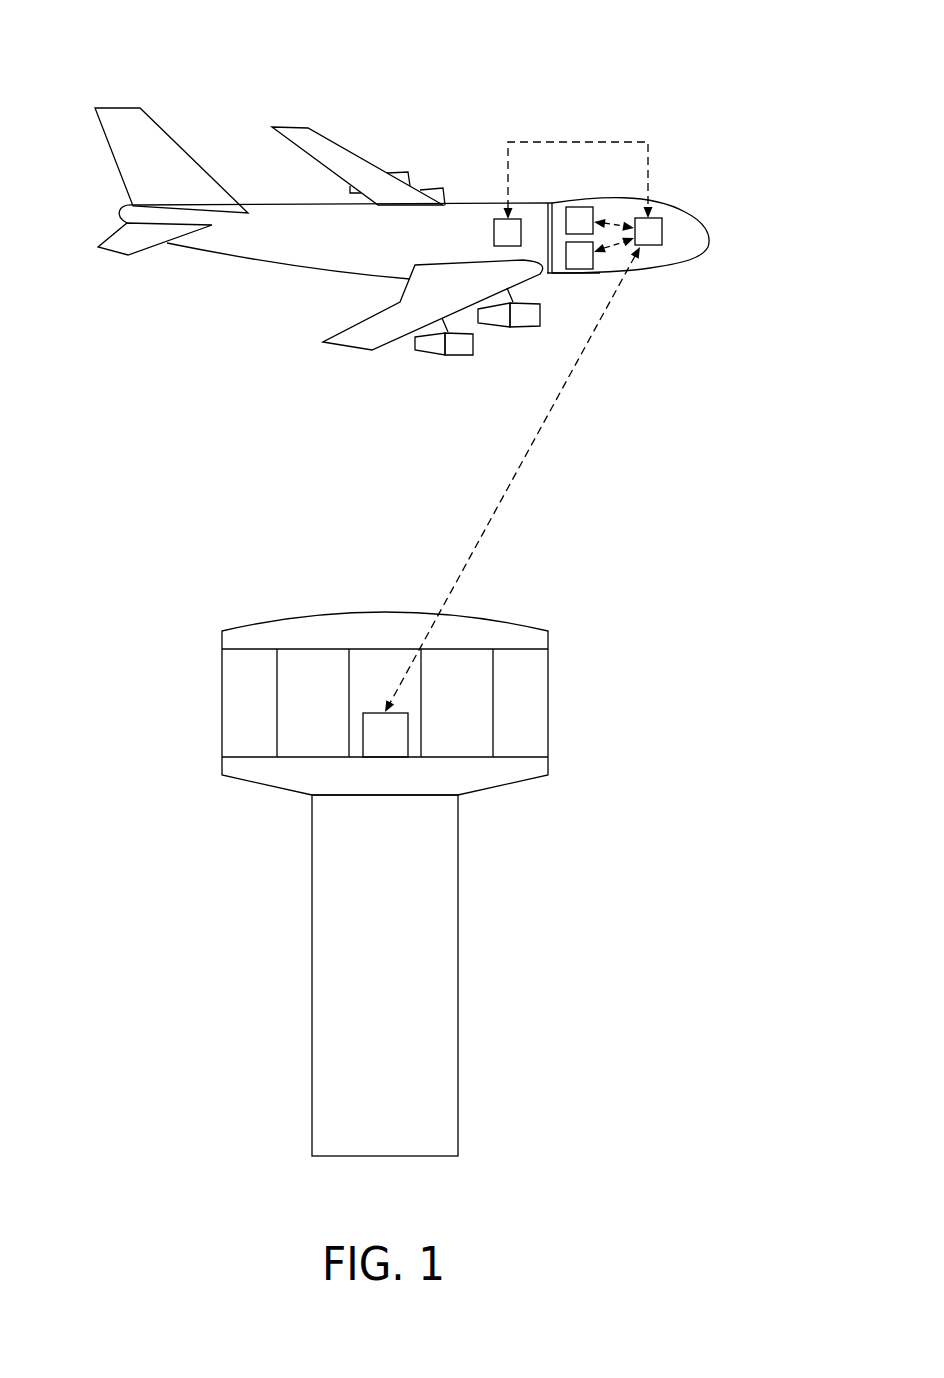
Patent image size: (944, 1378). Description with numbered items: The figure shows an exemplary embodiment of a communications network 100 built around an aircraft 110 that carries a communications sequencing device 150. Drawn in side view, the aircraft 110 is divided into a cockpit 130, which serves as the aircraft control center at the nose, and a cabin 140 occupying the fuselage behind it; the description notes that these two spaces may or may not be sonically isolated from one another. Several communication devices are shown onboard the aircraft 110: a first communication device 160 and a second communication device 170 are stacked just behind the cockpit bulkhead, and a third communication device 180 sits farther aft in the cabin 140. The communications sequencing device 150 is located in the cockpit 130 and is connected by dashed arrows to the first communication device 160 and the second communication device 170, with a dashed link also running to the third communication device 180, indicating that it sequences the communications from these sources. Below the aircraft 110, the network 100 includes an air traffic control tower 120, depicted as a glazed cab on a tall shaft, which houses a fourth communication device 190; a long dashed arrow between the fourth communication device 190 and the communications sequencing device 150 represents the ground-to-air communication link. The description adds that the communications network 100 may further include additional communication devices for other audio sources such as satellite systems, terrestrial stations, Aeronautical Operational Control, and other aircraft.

The communications network 100 is at (463, 580).
The aircraft 110 is at (415, 231).
The air traffic control tower 120 is at (385, 884).
The cockpit 130 is at (680, 252).
The cabin 140 is at (282, 215).
The communications sequencing device 150 is at (662, 224).
The first communication device 160 is at (574, 269).
The second communication device 170 is at (574, 207).
The third communication device 180 is at (503, 217).
The fourth communication device 190 is at (377, 748).